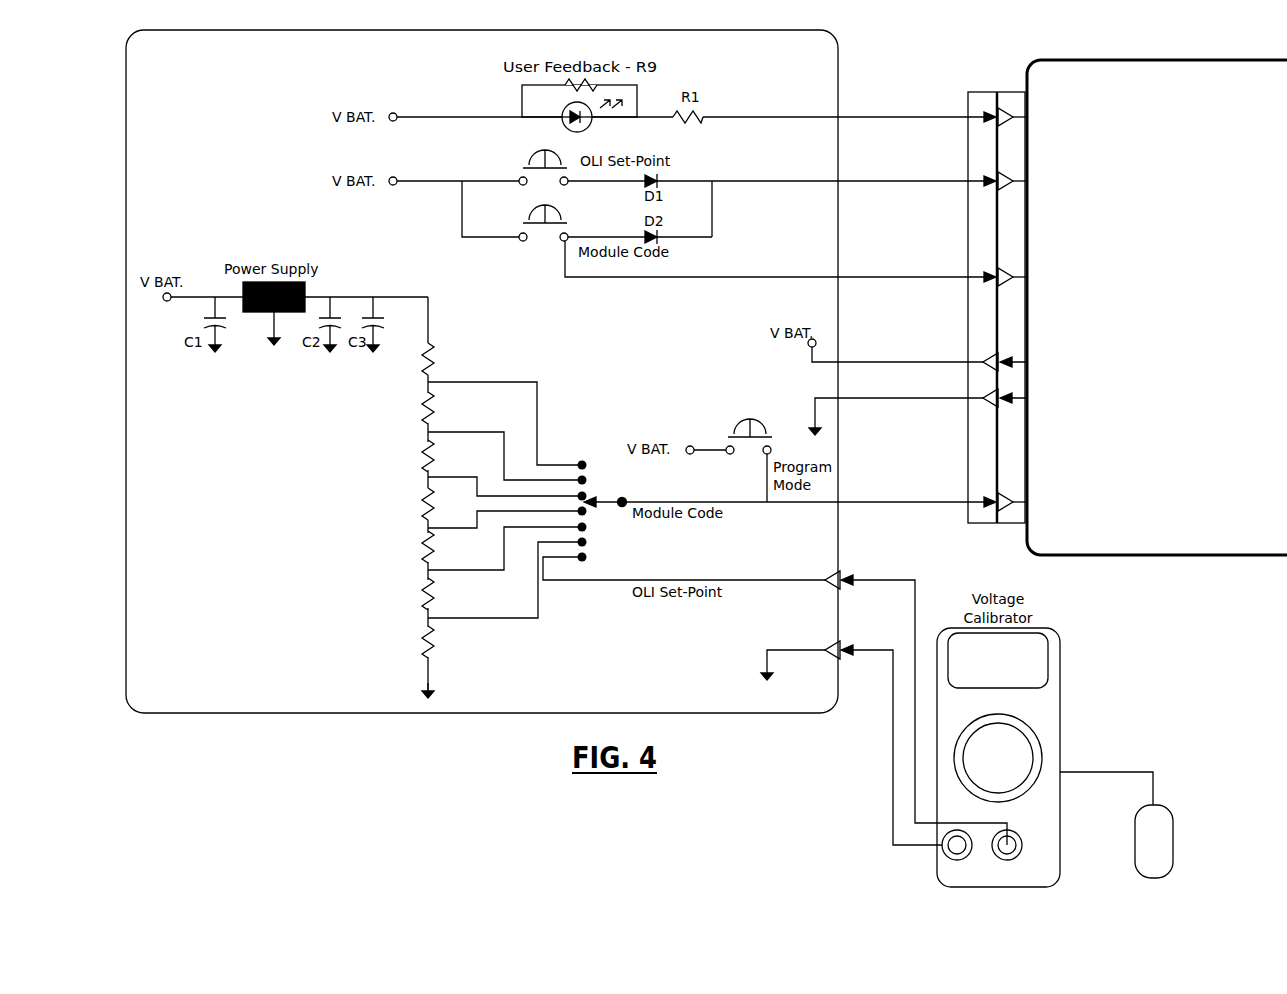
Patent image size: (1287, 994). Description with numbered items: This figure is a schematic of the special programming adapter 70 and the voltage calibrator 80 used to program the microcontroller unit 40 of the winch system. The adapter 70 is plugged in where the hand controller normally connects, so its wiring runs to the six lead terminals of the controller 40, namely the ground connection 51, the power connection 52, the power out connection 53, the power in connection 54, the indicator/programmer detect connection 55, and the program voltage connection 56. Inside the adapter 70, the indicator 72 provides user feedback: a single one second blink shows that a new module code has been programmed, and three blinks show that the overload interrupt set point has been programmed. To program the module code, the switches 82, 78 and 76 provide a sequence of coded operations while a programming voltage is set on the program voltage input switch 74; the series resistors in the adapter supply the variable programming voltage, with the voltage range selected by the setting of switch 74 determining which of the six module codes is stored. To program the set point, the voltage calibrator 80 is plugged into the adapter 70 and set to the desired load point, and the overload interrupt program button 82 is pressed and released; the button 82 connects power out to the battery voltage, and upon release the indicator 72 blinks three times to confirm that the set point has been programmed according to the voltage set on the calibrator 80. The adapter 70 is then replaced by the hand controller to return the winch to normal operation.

The microcontroller unit 40 is at (1197, 70).
The ground connection 51 is at (904, 400).
The power connection 52 is at (1018, 366).
The power out connection 53 is at (1021, 176).
The power in connection 54 is at (1013, 287).
The indicator/programmer detect connection 55 is at (1021, 110).
The program voltage connection 56 is at (1020, 515).
The special programming adapter 70 is at (148, 65).
The indicator 72 is at (562, 111).
The program voltage input switch 74 is at (617, 502).
The switch 76 is at (744, 398).
The switch 78 is at (534, 249).
The voltage calibrator 80 is at (1060, 706).
The overload interrupt program button 82 is at (525, 166).